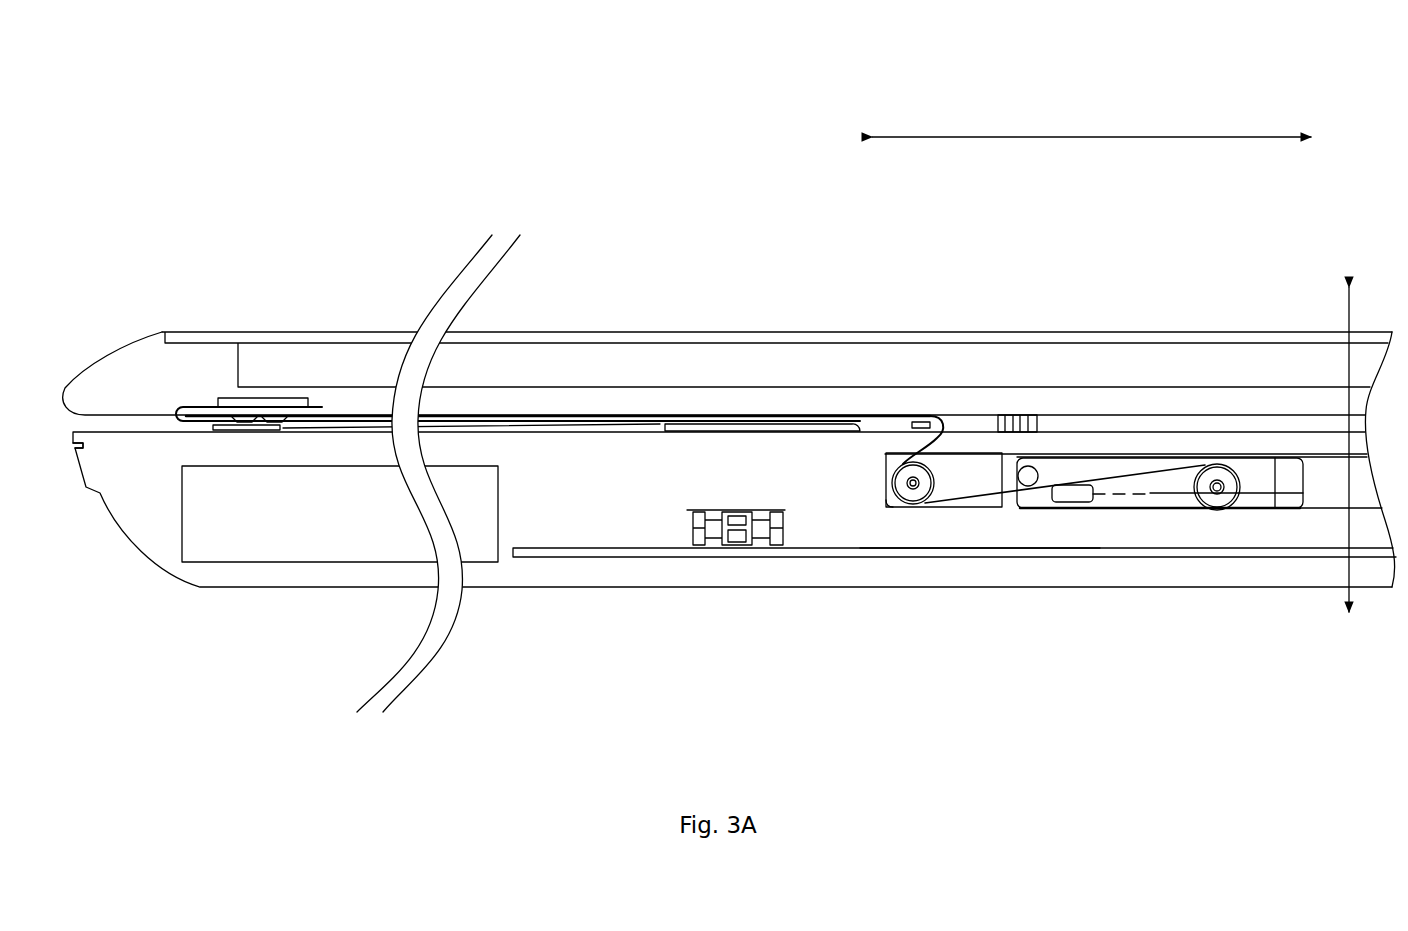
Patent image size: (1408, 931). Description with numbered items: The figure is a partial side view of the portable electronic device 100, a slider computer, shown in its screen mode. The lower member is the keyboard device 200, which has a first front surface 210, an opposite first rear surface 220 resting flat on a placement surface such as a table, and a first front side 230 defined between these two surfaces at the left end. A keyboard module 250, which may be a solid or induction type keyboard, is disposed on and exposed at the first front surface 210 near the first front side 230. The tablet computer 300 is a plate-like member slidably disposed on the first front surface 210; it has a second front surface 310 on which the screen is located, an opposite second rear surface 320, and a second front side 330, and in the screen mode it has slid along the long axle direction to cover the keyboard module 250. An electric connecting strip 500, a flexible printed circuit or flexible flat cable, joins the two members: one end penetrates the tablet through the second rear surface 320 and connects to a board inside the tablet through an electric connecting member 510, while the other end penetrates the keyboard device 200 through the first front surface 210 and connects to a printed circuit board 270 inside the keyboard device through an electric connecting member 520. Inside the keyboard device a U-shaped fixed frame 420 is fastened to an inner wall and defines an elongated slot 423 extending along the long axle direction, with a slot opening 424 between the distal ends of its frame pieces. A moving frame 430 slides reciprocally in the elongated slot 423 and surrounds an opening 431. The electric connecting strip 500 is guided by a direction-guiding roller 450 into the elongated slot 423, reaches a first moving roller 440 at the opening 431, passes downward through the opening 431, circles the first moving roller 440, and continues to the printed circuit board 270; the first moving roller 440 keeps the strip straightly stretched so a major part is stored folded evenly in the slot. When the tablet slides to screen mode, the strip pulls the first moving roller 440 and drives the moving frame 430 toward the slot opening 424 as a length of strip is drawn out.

The portable electronic device 100 is at (110, 114).
The keyboard device 200 is at (334, 600).
The first front surface 210 is at (1168, 432).
The first rear surface 220 is at (523, 590).
The first front side 230 is at (82, 476).
The keyboard module 250 is at (815, 425).
The printed circuit board 270 is at (990, 552).
The tablet computer 300 is at (163, 300).
The second front surface 310 is at (340, 331).
The second rear surface 320 is at (163, 418).
The second front side 330 is at (103, 358).
The U-shaped fixed frame 420 is at (1320, 452).
The elongated slot 423 is at (985, 462).
The slot opening 424 is at (879, 483).
The moving frame 430 is at (1092, 455).
The opening 431 is at (1170, 480).
The first moving roller 440 is at (1215, 505).
The direction-guiding roller 450 is at (911, 499).
The electric connecting strip 500 is at (917, 420).
The electric connecting member 510 is at (266, 397).
The electric connecting member 520 is at (767, 518).